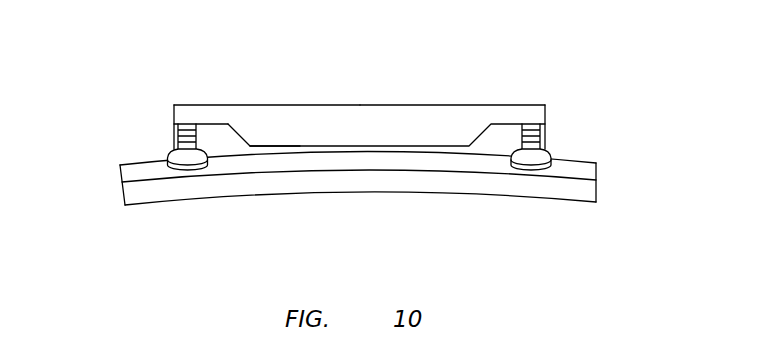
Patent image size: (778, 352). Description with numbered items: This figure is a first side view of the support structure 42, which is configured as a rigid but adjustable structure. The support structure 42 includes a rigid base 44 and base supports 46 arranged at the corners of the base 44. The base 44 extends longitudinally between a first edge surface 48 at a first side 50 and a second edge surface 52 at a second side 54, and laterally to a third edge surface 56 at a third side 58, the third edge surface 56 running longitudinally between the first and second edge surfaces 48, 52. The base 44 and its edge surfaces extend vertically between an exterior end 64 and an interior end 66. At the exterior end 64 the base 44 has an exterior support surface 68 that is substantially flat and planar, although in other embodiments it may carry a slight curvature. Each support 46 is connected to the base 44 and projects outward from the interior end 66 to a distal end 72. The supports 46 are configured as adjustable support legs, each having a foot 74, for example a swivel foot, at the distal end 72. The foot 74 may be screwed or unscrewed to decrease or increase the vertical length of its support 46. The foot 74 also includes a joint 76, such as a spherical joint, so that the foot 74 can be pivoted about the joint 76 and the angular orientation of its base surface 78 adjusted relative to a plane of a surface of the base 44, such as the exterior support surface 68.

The support structure 42 is at (361, 143).
The base 44 is at (361, 84).
The base support 46 is at (154, 136).
The first edge surface 48 is at (108, 111).
The first side 50 is at (173, 116).
The second edge surface 52 is at (612, 114).
The second side 54 is at (546, 114).
The third edge surface 56 is at (359, 182).
The third side 58 is at (359, 182).
The exterior end 64 is at (252, 105).
The interior end 66 is at (262, 148).
The exterior support surface 68 is at (432, 105).
The distal end 72 is at (307, 208).
The foot 74 is at (153, 176).
The joint 76 is at (163, 146).
The base surface 78 is at (307, 208).